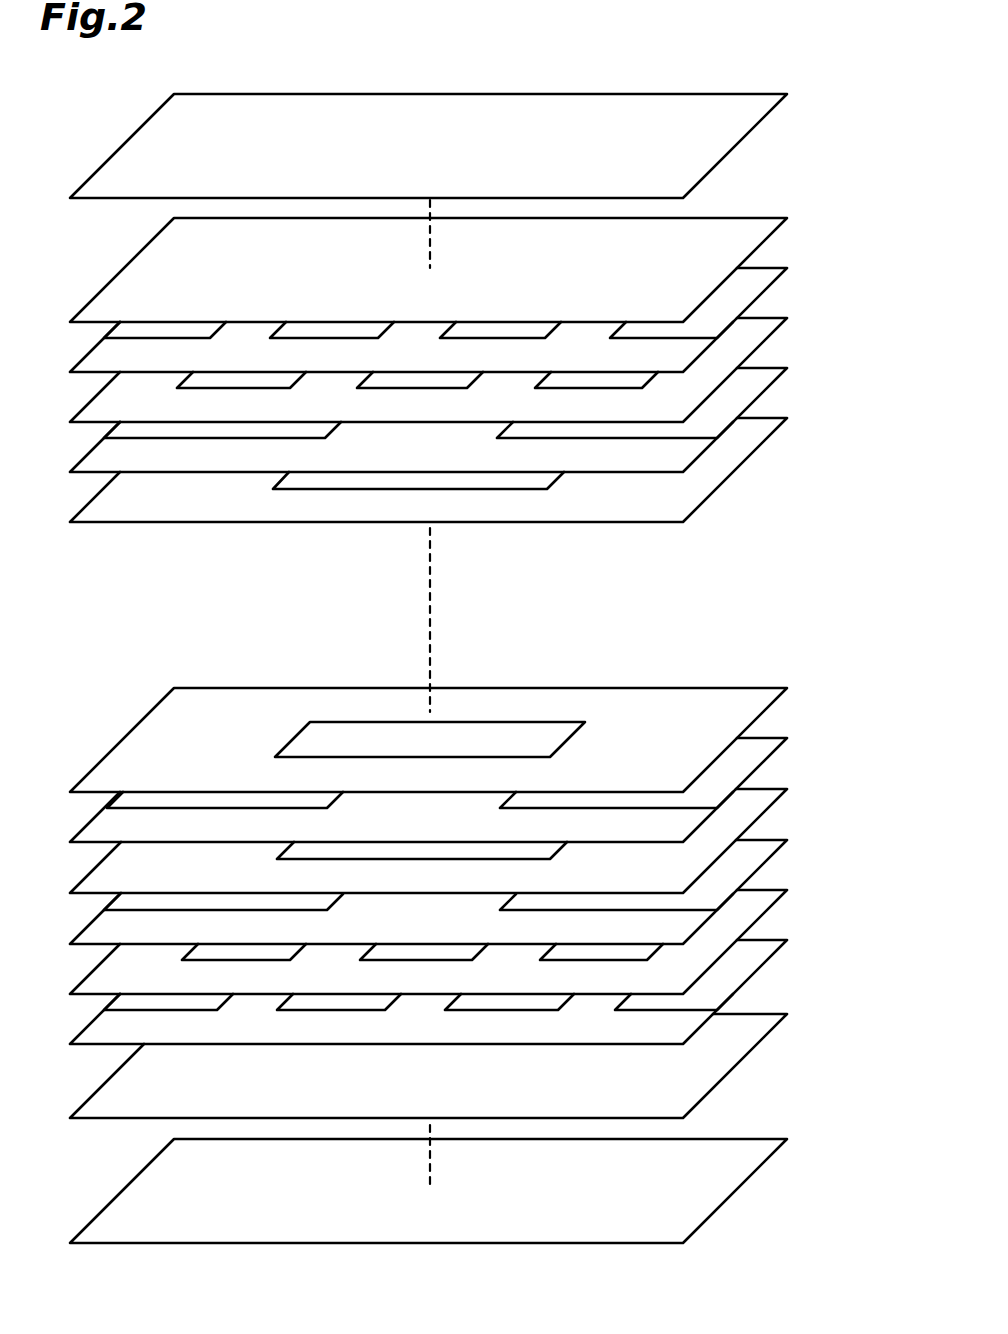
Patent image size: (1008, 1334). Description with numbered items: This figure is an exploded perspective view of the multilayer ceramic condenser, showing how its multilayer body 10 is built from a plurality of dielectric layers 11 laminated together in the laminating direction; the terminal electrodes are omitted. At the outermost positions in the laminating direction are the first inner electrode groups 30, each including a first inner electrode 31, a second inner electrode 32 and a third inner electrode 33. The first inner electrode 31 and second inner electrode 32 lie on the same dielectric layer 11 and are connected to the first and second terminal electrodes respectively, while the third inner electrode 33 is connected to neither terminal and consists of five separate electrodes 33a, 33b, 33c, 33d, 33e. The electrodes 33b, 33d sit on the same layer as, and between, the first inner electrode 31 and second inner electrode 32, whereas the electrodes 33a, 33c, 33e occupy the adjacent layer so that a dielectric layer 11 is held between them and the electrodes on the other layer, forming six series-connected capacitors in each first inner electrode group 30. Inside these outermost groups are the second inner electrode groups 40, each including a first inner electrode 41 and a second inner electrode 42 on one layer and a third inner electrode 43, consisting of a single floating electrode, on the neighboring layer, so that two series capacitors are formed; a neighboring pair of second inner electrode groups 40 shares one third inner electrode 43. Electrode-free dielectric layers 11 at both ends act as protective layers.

The multilayer body 10 is at (858, 128).
The dielectric layer 11 is at (725, 139).
The first inner electrode group 30 is at (682, 256).
The first inner electrode 31 is at (167, 336).
The second inner electrode 32 is at (650, 332).
The third inner electrode 33 is at (627, 287).
The electrode 33a is at (242, 380).
The electrode 33b is at (335, 331).
The electrode 33c is at (415, 374).
The electrode 33d is at (500, 331).
The electrode 33e is at (590, 374).
The second inner electrode group 40 is at (728, 639).
The first inner electrode 41 is at (205, 432).
The second inner electrode 42 is at (582, 430).
The third inner electrode 43 is at (375, 487).